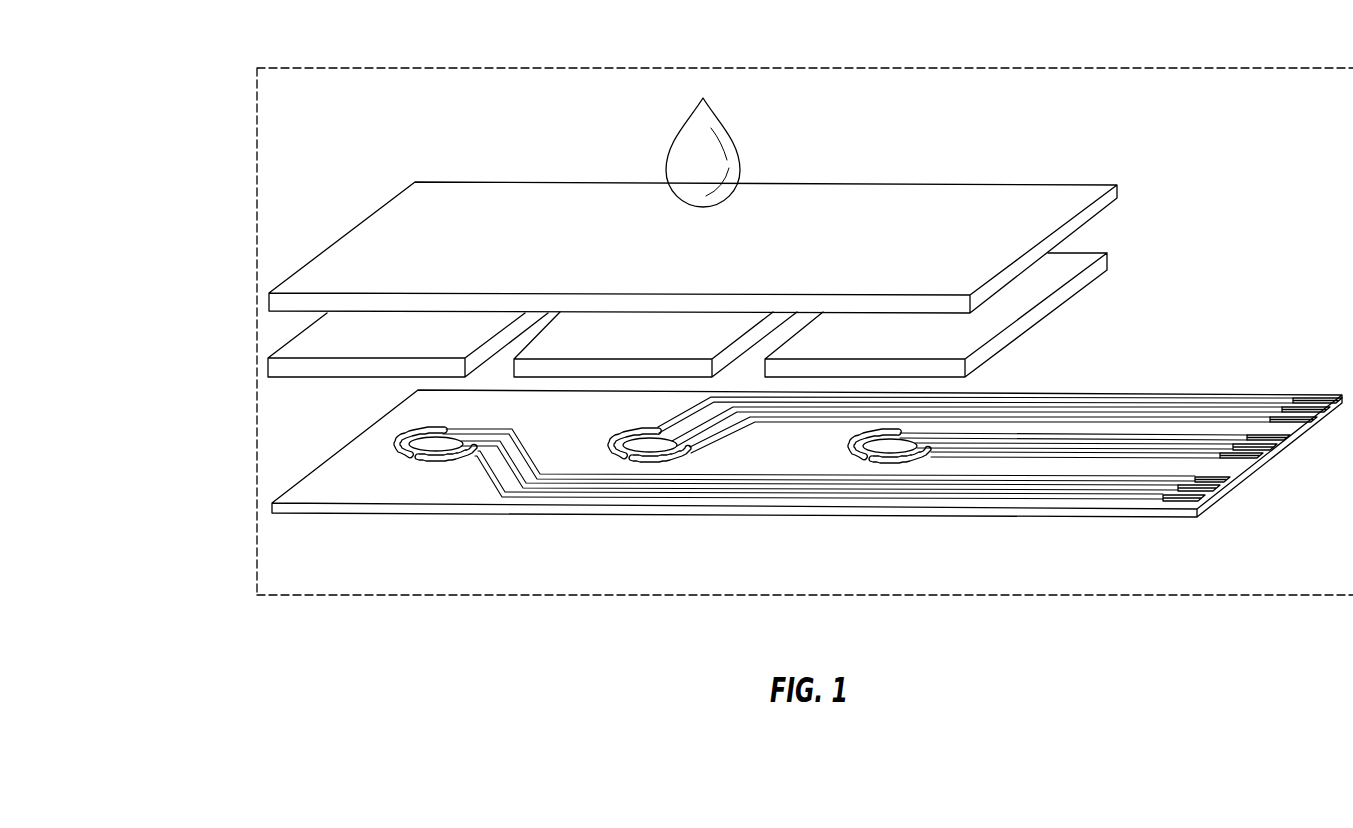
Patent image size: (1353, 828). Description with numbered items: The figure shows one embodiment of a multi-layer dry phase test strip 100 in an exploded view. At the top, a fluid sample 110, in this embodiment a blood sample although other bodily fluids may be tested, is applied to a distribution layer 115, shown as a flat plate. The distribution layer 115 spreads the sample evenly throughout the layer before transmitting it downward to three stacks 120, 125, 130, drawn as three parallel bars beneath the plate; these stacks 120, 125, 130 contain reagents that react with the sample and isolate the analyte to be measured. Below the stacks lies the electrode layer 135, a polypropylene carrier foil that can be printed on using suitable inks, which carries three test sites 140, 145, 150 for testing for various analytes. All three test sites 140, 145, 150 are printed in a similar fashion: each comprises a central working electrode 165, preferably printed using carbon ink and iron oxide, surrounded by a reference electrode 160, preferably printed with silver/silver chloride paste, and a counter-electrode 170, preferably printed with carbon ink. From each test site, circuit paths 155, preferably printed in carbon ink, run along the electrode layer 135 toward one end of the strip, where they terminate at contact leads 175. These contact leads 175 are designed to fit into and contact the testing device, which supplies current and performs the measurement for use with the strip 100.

The multi-layer dry phase test strip 100 is at (257, 129).
The fluid sample 110 is at (671, 147).
The distribution layer 115 is at (530, 203).
The stack 120 is at (297, 348).
The stack 125 is at (626, 340).
The stack 130 is at (1045, 312).
The electrode layer 135 is at (327, 478).
The test site 140 is at (415, 468).
The test site 145 is at (708, 465).
The test site 150 is at (929, 437).
The circuit paths 155 is at (515, 495).
The reference electrode 160 is at (453, 462).
The working electrode 165 is at (450, 445).
The counter-electrode 170 is at (398, 435).
The contact leads 175 is at (1232, 488).